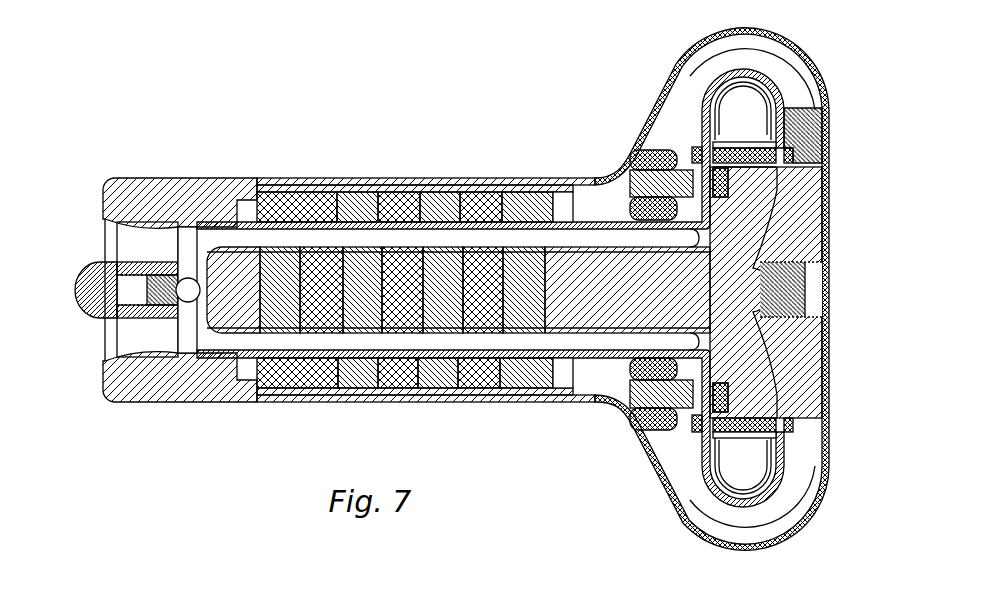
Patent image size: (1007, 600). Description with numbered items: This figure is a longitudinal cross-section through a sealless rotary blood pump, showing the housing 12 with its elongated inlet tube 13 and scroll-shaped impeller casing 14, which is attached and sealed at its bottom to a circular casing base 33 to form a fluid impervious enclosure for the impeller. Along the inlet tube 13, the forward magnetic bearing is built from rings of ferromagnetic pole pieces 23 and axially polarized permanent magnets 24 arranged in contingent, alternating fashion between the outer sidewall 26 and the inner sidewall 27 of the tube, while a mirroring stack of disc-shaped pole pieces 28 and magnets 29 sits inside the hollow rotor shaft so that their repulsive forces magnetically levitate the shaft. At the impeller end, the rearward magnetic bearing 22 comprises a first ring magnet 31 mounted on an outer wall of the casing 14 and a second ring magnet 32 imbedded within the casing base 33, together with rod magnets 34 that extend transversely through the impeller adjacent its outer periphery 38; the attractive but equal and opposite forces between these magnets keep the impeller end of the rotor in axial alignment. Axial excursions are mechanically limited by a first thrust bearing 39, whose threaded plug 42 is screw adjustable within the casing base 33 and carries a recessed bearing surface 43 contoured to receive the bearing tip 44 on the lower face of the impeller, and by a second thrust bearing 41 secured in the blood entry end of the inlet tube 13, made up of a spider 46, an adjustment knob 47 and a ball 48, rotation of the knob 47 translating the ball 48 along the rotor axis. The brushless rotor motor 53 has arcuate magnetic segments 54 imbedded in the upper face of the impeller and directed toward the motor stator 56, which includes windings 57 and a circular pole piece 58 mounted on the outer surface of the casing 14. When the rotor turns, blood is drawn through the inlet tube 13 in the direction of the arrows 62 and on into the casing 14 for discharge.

The housing 12 is at (737, 26).
The inlet tube 13 is at (230, 165).
The impeller casing 14 is at (770, 62).
The rearward magnetic bearing 22 is at (808, 126).
The ferromagnetic pole pieces 23 is at (345, 195).
The axially polarized permanent magnets 24 is at (400, 195).
The outer sidewall 26 is at (208, 178).
The inner sidewall 27 is at (575, 228).
The ferromagnetic pole pieces 28 is at (355, 200).
The axially polarized permanent magnets 29 is at (318, 285).
The first ring magnet 31 is at (692, 150).
The second ring magnet 32 is at (795, 153).
The casing base 33 is at (812, 203).
The rod magnets 34 is at (795, 160).
The outer periphery 38 is at (755, 438).
The first thrust bearing 39 is at (820, 288).
The second thrust bearing 41 is at (203, 243).
The threaded plug 42 is at (820, 267).
The recessed bearing surface 43 is at (820, 302).
The bearing tip 44 is at (775, 262).
The spider 46 is at (125, 336).
The adjustment knob 47 is at (88, 262).
The ball 48 is at (186, 278).
The brushless rotor motor 53 is at (648, 113).
The arcuate magnetic segments 54 is at (728, 185).
The motor stator 56 is at (625, 385).
The windings 57 is at (650, 150).
The circular pole piece 58 is at (632, 192).
The arrows 62 is at (240, 236).